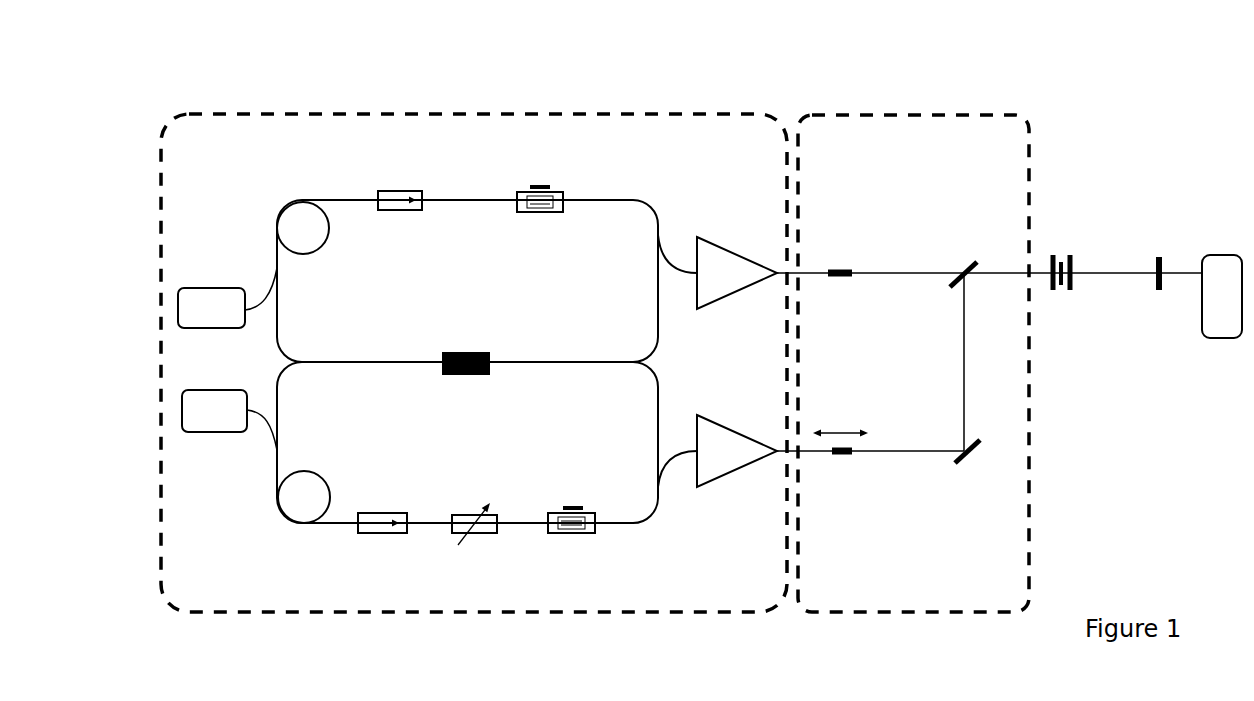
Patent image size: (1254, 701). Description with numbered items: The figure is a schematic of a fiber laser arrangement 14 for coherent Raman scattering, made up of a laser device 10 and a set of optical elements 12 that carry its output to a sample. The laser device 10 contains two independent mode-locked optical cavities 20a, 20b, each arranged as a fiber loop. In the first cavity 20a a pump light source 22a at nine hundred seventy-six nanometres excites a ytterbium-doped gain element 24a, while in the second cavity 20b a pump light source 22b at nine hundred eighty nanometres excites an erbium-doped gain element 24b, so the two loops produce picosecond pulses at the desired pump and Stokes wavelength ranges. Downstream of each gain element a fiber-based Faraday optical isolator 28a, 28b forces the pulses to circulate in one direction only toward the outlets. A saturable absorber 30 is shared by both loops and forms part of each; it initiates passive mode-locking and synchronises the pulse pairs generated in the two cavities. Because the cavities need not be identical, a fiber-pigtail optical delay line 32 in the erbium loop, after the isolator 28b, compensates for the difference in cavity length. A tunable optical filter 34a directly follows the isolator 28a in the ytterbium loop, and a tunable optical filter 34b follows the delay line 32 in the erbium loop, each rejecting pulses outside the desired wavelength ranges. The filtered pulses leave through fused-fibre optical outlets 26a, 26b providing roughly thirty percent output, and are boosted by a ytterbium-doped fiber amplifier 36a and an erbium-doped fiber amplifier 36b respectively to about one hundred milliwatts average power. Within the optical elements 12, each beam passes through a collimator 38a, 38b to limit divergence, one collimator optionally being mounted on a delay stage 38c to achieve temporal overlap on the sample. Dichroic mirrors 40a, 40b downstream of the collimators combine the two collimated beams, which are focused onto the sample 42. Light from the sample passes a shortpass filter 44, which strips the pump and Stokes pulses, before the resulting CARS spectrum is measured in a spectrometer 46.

The laser device 10 is at (238, 105).
The optical elements 12 is at (1042, 153).
The arrangement 14 is at (637, 82).
The first optical cavity 20a is at (505, 175).
The second optical cavity 20b is at (510, 548).
The pump light source 22a is at (238, 322).
The pump light source 22b is at (241, 425).
The gain element 24a is at (313, 253).
The gain element 24b is at (308, 471).
The optical outlet 26a is at (660, 236).
The optical outlet 26b is at (660, 486).
The optical isolator 28a is at (400, 212).
The optical isolator 28b is at (382, 513).
The saturable absorber 30 is at (465, 352).
The optical delay line 32 is at (463, 515).
The optical filter 34a is at (540, 213).
The optical filter 34b is at (573, 506).
The fiber amplifier 36a is at (741, 252).
The fiber amplifier 36b is at (734, 470).
The collimator 38a is at (842, 269).
The collimator 38b is at (842, 456).
The delay stage 38c is at (849, 428).
The dichroic mirror 40a is at (963, 267).
The dichroic mirror 40b is at (968, 456).
The sample 42 is at (1062, 291).
The shortpass filter 44 is at (1161, 257).
The spectrometer 46 is at (1223, 340).